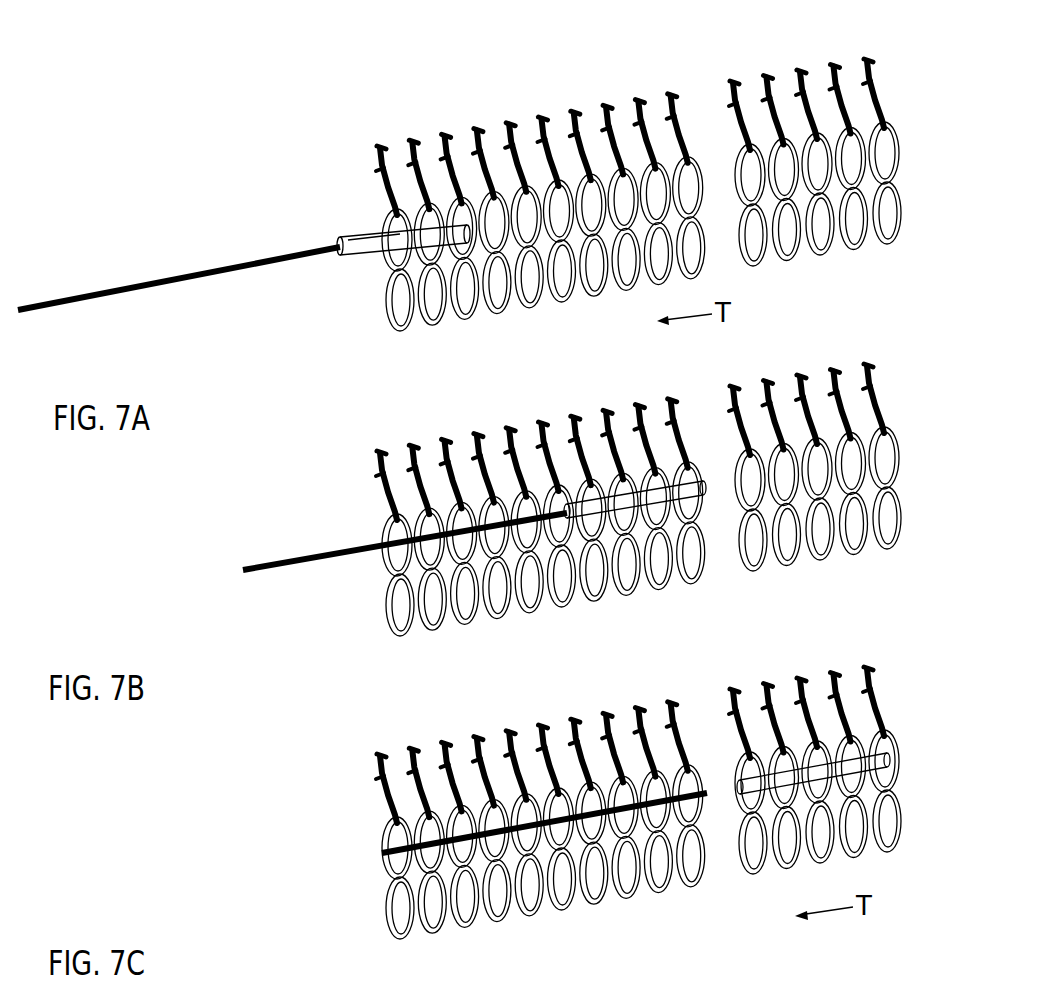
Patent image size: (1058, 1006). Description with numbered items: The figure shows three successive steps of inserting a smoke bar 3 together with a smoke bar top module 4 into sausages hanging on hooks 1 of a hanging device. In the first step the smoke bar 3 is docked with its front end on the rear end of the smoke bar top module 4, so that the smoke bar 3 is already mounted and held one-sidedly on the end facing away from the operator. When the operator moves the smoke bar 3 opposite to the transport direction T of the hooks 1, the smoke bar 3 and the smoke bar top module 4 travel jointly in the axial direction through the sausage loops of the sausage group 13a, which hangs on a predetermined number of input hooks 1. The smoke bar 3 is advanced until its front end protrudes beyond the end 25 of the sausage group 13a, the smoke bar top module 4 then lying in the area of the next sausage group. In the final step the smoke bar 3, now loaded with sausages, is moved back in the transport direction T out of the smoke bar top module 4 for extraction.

In FIG. 7A, the hooks 1 is at (873, 80).
In FIG. 7B, the hooks 1 is at (873, 385).
In FIG. 7C, the hooks 1 is at (873, 688).
In FIG. 7A, the sausage group 13a is at (528, 100).
In FIG. 7B, the sausage group 13a is at (528, 405).
In FIG. 7C, the sausage group 13a is at (528, 708).
In FIG. 7A, the smoke bar 3 is at (249, 275).
In FIG. 7B, the smoke bar 3 is at (309, 575).
In FIG. 7C, the smoke bar 3 is at (382, 848).
In FIG. 7A, the smoke bar top module 4 is at (363, 256).
In FIG. 7B, the smoke bar top module 4 is at (624, 572).
In FIG. 7C, the smoke bar top module 4 is at (867, 767).
In FIG. 7C, the end of sausage group 25 is at (707, 703).